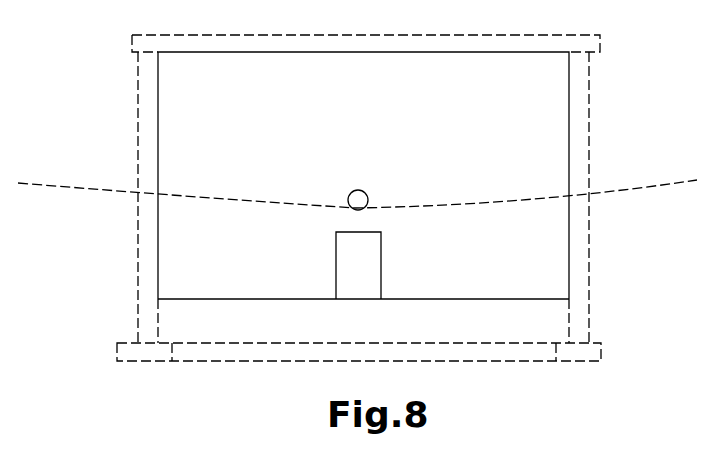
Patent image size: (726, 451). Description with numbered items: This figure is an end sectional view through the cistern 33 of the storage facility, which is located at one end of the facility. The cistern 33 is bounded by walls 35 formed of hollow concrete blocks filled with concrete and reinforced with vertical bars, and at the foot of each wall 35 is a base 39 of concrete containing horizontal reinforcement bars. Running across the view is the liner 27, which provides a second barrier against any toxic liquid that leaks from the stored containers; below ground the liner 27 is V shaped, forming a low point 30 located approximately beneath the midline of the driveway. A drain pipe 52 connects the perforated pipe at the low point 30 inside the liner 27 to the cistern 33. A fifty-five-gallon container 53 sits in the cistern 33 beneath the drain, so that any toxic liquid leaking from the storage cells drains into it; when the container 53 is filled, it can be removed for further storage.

The cistern 33 is at (547, 120).
The walls 35 is at (582, 253).
The base 39 is at (601, 353).
The liner 27 is at (543, 193).
The low point 30 is at (400, 207).
The drain pipe 52 is at (358, 198).
The container 53 is at (365, 268).